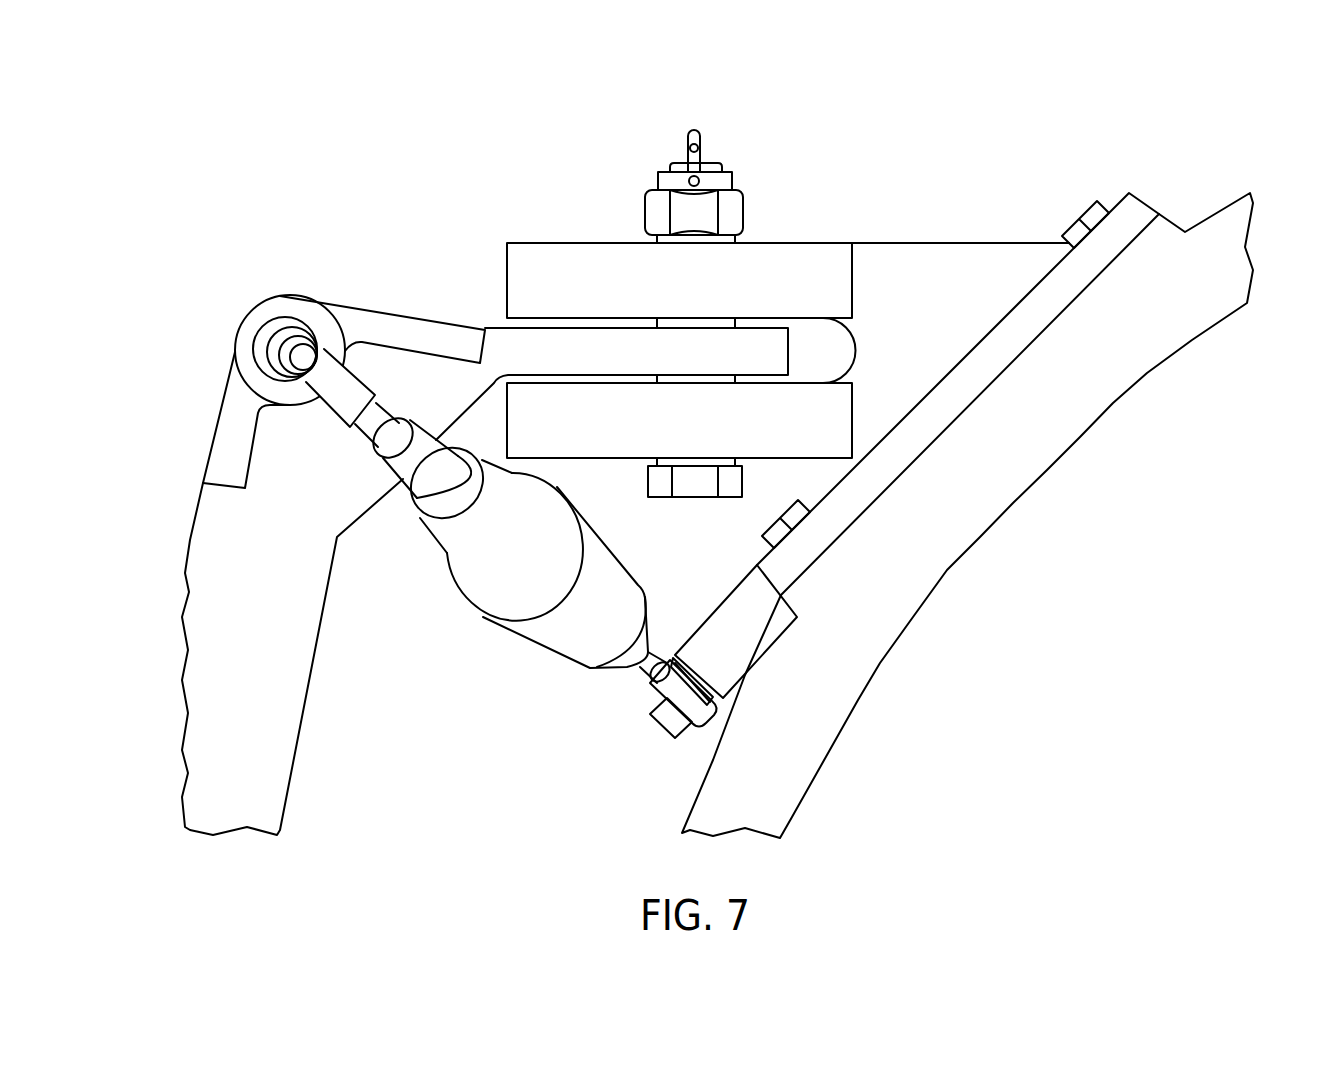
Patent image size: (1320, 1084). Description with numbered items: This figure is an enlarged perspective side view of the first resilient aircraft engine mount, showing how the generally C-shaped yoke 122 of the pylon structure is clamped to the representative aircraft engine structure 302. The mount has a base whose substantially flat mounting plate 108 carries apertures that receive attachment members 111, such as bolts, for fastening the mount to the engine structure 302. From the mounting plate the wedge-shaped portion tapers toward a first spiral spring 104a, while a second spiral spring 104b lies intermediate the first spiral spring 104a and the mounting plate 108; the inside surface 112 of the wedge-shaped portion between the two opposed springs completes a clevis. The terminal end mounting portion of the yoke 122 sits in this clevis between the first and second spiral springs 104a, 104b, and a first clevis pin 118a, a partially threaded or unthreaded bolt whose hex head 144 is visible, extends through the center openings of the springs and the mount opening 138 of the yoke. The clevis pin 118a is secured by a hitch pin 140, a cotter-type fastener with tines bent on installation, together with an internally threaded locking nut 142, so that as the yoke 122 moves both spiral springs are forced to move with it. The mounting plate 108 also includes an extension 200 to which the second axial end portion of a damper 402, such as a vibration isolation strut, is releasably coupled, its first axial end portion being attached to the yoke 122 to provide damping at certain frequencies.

The first spiral spring 104a is at (805, 262).
The second spiral spring 104b is at (826, 463).
The mounting plate 108 is at (1146, 203).
The attachment members 111 is at (1080, 215).
The inside surface 112 is at (856, 350).
The first clevis pin 118a is at (708, 162).
The yoke 122 is at (298, 722).
The mount opening 138 is at (708, 340).
The hitch pin 140 is at (694, 128).
The locking nut 142 is at (743, 190).
The hex head 144 is at (693, 498).
The extension 200 is at (713, 611).
The aircraft engine structure 302 is at (852, 705).
The damper 402 is at (543, 645).